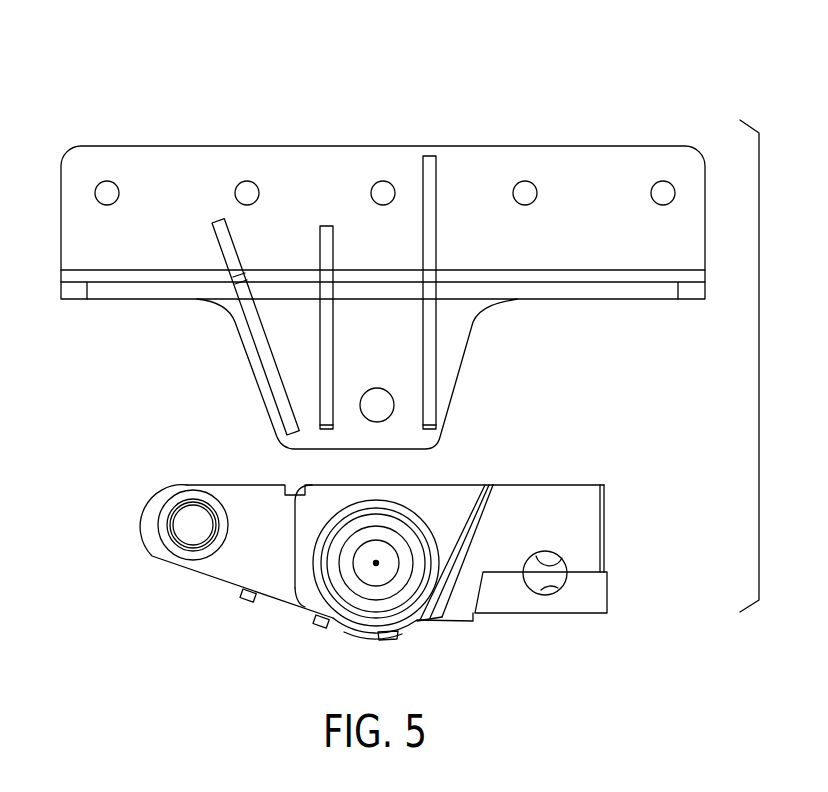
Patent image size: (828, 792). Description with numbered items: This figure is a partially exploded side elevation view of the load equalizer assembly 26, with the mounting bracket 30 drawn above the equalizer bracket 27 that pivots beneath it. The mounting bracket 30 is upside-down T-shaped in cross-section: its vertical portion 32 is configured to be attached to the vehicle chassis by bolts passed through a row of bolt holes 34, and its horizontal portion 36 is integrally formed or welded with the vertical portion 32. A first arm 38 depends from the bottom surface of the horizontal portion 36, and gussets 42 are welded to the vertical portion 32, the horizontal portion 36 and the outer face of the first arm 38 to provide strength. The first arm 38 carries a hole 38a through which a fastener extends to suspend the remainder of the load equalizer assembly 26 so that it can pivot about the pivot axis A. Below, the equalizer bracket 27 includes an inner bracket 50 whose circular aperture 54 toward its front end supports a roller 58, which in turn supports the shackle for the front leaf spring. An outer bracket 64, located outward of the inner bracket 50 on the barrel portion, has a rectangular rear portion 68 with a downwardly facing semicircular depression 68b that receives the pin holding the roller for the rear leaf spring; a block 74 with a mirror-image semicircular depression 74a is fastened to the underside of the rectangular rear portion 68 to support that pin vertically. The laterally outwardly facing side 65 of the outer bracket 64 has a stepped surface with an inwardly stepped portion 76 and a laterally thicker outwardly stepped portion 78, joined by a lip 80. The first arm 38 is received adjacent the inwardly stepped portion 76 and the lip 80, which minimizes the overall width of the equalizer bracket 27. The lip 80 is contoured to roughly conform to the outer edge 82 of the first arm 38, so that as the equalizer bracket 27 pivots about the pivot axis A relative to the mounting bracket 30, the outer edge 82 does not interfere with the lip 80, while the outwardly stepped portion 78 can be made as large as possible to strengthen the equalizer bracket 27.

The load equalizer assembly 26 is at (641, 62).
The mounting bracket 30 is at (589, 141).
The vertical portion 32 is at (182, 163).
The bolt holes 34 is at (118, 193).
The horizontal portion 36 is at (692, 290).
The first arm 38 is at (248, 337).
The hole 38a is at (390, 397).
The gussets 42 is at (437, 170).
The outer edge 82 is at (465, 352).
The equalizer bracket 27 is at (629, 471).
The inner bracket 50 is at (225, 573).
The circular aperture 54 is at (172, 516).
The roller 58 is at (188, 528).
The outer bracket 64 is at (310, 593).
The laterally outwardly facing side 65 is at (459, 590).
The rectangular rear portion 68 is at (585, 506).
The downwardly facing semicircular depression 68b is at (563, 565).
The block 74 is at (590, 597).
The semicircular depression 74a is at (542, 592).
The inwardly stepped portion 76 is at (322, 508).
The outwardly stepped portion 78 is at (528, 529).
The lip 80 is at (465, 528).
The pivot axis A is at (376, 566).